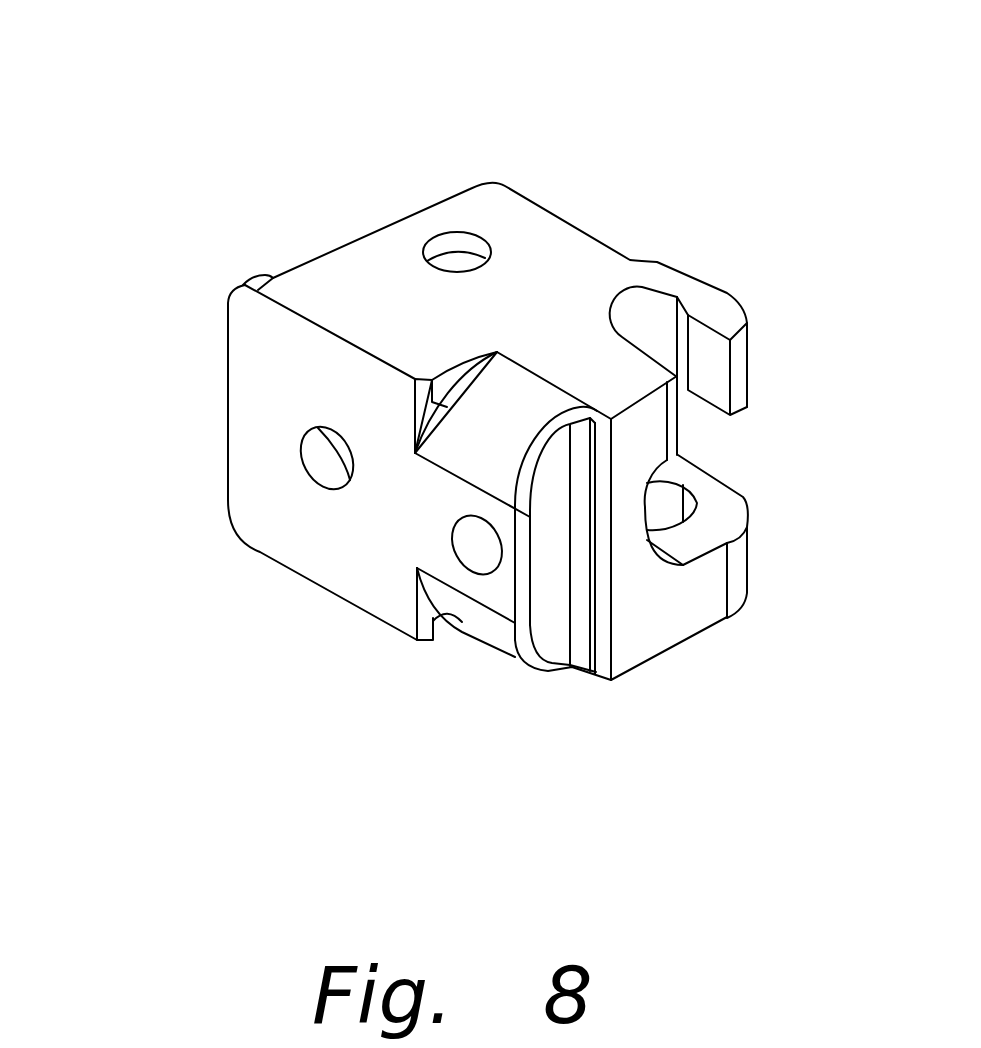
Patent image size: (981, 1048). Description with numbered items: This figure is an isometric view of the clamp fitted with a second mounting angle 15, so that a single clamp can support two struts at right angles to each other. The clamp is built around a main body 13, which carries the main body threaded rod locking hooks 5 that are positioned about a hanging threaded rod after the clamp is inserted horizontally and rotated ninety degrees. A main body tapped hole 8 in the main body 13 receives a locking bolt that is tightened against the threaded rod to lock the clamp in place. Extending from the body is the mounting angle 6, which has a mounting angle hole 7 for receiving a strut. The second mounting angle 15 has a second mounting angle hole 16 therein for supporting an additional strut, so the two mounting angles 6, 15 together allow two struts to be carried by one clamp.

The main body threaded rod locking hooks 5 is at (718, 272).
The mounting angle 6 is at (297, 561).
The mounting angle hole 7 is at (271, 408).
The main body tapped hole 8 is at (457, 602).
The main body 13 is at (555, 643).
The second mounting angle 15 is at (560, 200).
The second mounting angle hole 16 is at (400, 214).